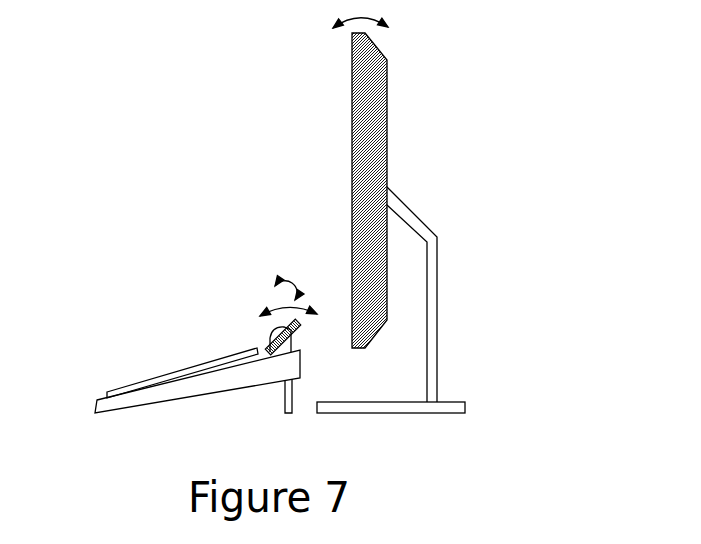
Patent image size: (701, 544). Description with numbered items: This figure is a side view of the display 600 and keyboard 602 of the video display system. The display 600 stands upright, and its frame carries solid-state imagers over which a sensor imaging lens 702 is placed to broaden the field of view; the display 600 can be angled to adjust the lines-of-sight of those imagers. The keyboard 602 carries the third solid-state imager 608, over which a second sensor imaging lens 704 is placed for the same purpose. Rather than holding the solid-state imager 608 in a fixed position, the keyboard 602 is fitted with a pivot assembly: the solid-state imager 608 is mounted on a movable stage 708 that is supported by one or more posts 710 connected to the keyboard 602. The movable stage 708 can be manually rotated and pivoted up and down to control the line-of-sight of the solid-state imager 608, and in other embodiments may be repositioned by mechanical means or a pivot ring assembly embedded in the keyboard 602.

The display 600 is at (440, 90).
The keyboard 602 is at (138, 402).
The third solid-state imager 608 is at (247, 305).
The sensor imaging lens 702 is at (352, 175).
The sensor imaging lens 704 is at (268, 334).
The movable stage 708 is at (300, 328).
The posts 710 is at (300, 355).